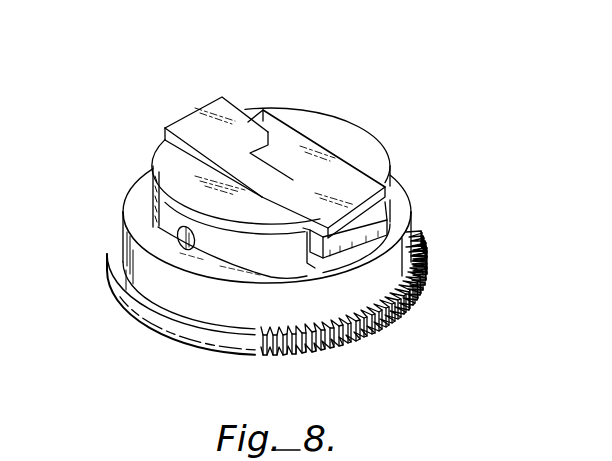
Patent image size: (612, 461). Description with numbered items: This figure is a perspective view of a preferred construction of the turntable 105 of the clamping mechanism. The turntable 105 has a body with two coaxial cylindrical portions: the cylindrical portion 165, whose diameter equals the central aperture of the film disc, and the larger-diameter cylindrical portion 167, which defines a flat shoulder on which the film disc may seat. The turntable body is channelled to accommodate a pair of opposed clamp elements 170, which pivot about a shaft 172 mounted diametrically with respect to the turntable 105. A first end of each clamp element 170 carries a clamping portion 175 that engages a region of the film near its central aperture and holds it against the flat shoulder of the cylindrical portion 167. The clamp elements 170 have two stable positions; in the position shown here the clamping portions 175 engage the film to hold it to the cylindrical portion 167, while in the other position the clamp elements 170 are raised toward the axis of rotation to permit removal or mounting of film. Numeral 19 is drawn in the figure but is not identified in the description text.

The chuck body 105 is at (366, 131).
The cylindrical jaw carrier 165 is at (380, 166).
The lower jaw block 167 is at (404, 211).
The jaw bars 170 is at (309, 181).
The side hole 172 is at (180, 240).
The gear teeth 175 is at (331, 277).
The slot 19 is at (353, 232).